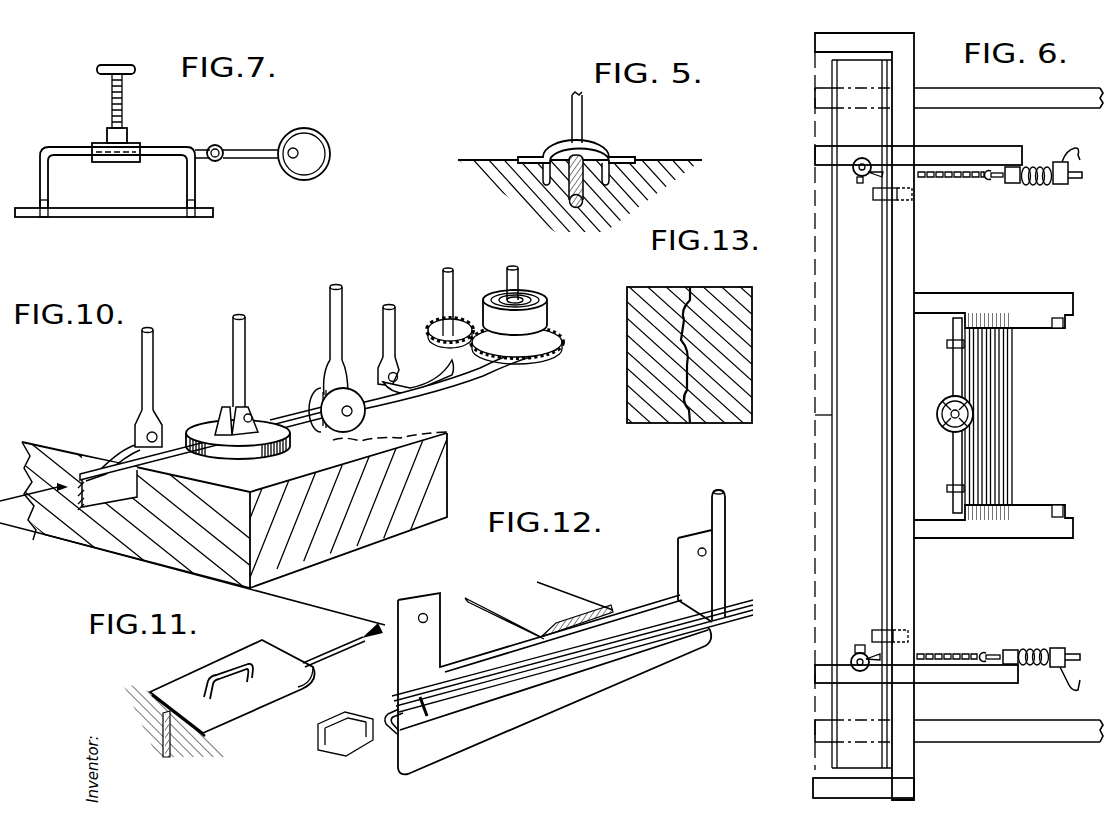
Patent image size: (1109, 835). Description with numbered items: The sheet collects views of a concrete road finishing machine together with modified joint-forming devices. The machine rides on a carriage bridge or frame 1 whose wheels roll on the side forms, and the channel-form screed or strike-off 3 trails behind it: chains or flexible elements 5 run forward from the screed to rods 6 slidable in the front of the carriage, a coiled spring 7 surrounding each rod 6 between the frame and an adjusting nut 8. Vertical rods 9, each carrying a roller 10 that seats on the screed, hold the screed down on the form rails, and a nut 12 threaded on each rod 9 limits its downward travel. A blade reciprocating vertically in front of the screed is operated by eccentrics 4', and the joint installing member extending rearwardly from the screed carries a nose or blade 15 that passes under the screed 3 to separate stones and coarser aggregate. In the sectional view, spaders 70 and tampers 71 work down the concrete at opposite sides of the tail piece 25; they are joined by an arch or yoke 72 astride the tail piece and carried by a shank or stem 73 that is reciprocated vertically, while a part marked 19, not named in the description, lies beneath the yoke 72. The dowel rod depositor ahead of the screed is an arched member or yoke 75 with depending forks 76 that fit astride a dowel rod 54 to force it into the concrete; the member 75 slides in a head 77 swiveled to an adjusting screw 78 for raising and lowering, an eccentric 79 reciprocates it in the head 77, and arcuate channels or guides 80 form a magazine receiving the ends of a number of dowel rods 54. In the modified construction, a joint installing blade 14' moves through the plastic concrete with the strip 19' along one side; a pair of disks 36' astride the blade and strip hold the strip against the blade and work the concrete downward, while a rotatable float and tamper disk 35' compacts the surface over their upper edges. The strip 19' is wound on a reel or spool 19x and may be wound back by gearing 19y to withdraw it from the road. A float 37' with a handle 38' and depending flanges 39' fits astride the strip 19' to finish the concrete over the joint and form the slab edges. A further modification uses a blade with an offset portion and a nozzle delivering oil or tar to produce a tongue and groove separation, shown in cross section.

In FIG. 6, the carriage bridge or frame 1 is at (907, 73).
In FIG. 6, the screed or strike-off 3 is at (868, 253).
In FIG. 6, the eccentrics 4' is at (882, 415).
In FIG. 6, the chains or flexible elements 5 is at (944, 178).
In FIG. 6, the rod 6 is at (993, 180).
In FIG. 6, the coiled spring 7 is at (1030, 185).
In FIG. 6, the adjusting nut 8 is at (1058, 184).
In FIG. 6, the vertical rods 9 is at (862, 158).
In FIG. 6, the roller 10 is at (859, 645).
In FIG. 6, the nut 12 is at (860, 184).
In FIG. 6, the nose or blade 15 is at (823, 418).
In FIG. 5, the anchor pin 19 is at (542, 219).
In FIG. 10, the strip 19' is at (318, 411).
In FIG. 11, the strip 19' is at (248, 705).
In FIG. 10, the reel or spool 19x is at (533, 297).
In FIG. 10, the gearing 19y is at (470, 315).
In FIG. 10, the joint installing blade 14' is at (300, 399).
In FIG. 5, the tail piece 25 is at (583, 157).
In FIG. 10, the rotatable float and tamper member or disk 35' is at (236, 387).
In FIG. 10, the disks 36' is at (331, 359).
In FIG. 11, the float 37' is at (232, 688).
In FIG. 11, the handle 38' is at (228, 668).
In FIG. 11, the depending flanges 39' is at (139, 734).
In FIG. 7, the dowel rod 54 is at (103, 217).
In FIG. 6, the dowel rod 54 is at (1007, 405).
In FIG. 5, the spaders 70 is at (543, 173).
In FIG. 5, the tampers 71 is at (633, 160).
In FIG. 5, the arch or yoke 72 is at (550, 145).
In FIG. 5, the shank or stem 73 is at (572, 105).
In FIG. 7, the arched member or yoke 75 is at (58, 148).
In FIG. 6, the arched member or yoke 75 is at (952, 468).
In FIG. 7, the depending forks 76 is at (43, 217).
In FIG. 6, the depending forks 76 is at (947, 487).
In FIG. 7, the head 77 is at (113, 162).
In FIG. 6, the head 77 is at (948, 438).
In FIG. 7, the adjusting screw 78 is at (122, 102).
In FIG. 6, the adjusting screw 78 is at (945, 400).
In FIG. 7, the eccentric 79 is at (310, 130).
In FIG. 6, the arcuate channels or guides 80 is at (1036, 329).